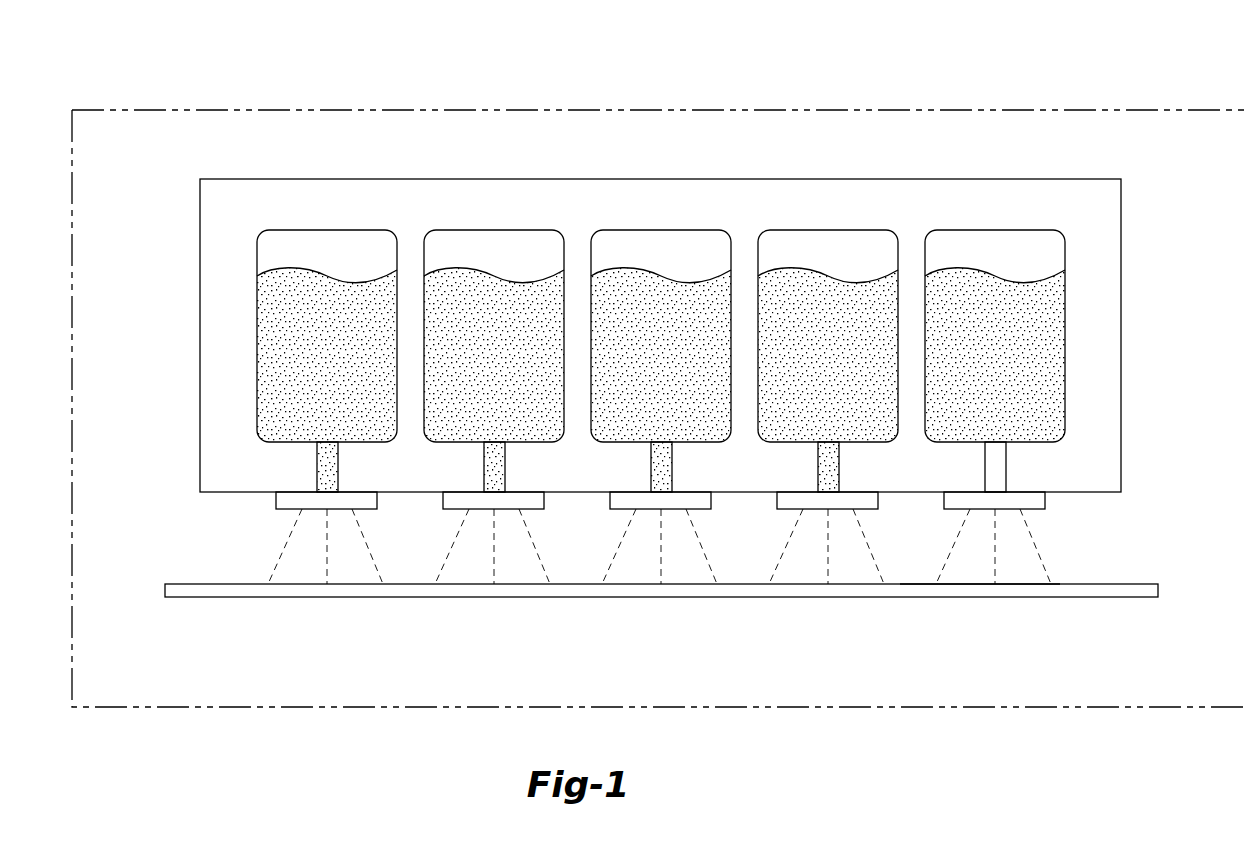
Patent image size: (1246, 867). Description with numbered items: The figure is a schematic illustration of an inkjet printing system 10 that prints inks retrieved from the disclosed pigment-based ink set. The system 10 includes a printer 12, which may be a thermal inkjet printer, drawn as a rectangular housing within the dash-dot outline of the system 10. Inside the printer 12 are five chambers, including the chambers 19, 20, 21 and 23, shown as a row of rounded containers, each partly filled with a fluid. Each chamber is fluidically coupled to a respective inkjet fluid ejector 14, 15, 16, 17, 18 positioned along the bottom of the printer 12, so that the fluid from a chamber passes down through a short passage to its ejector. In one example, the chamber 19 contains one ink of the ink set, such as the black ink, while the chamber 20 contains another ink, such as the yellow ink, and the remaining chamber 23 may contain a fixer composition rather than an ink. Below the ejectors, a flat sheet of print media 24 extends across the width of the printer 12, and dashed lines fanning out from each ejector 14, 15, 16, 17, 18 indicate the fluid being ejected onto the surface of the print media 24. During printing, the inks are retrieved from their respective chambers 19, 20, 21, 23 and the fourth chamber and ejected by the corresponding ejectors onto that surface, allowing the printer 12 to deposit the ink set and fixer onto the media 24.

The inkjet printing system 10 is at (255, 110).
The printer 12 is at (200, 316).
The inkjet fluid ejector 14 is at (277, 509).
The inkjet fluid ejector 15 is at (444, 509).
The inkjet fluid ejector 16 is at (611, 509).
The inkjet fluid ejector 17 is at (778, 509).
The inkjet fluid ejector 18 is at (945, 509).
The chamber 19 is at (327, 230).
The chamber 20 is at (494, 230).
The chamber 21 is at (661, 230).
The chamber 23 is at (995, 230).
The print media 24 is at (1158, 591).